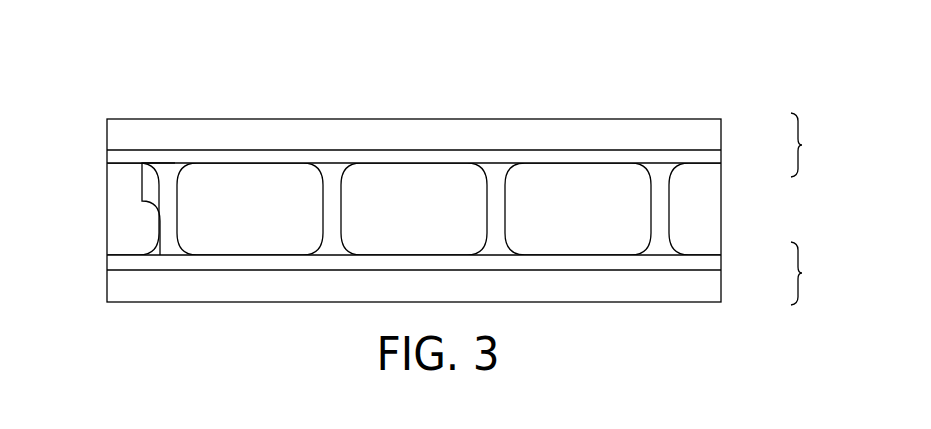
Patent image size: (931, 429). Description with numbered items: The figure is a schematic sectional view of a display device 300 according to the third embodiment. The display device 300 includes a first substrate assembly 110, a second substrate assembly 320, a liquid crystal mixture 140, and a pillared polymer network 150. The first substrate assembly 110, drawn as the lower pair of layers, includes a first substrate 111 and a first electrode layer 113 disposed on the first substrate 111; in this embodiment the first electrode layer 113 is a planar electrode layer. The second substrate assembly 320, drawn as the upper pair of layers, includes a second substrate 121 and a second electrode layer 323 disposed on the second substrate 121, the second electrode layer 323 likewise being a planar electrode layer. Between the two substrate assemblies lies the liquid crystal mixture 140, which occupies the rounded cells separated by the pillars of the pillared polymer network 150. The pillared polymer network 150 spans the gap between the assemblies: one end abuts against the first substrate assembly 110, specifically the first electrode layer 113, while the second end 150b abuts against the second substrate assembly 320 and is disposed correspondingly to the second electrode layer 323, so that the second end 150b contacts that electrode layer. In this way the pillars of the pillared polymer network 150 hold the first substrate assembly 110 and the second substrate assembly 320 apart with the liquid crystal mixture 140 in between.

The display device 300 is at (74, 68).
The second substrate assembly 320 is at (821, 145).
The second substrate 121 is at (710, 134).
The second electrode layer 323 is at (710, 157).
The liquid crystal mixture 140 is at (710, 208).
The pillared polymer network 150 is at (167, 217).
The second end 150b is at (167, 163).
The first electrode layer 113 is at (710, 262).
The first substrate 111 is at (710, 285).
The first substrate assembly 110 is at (820, 273).